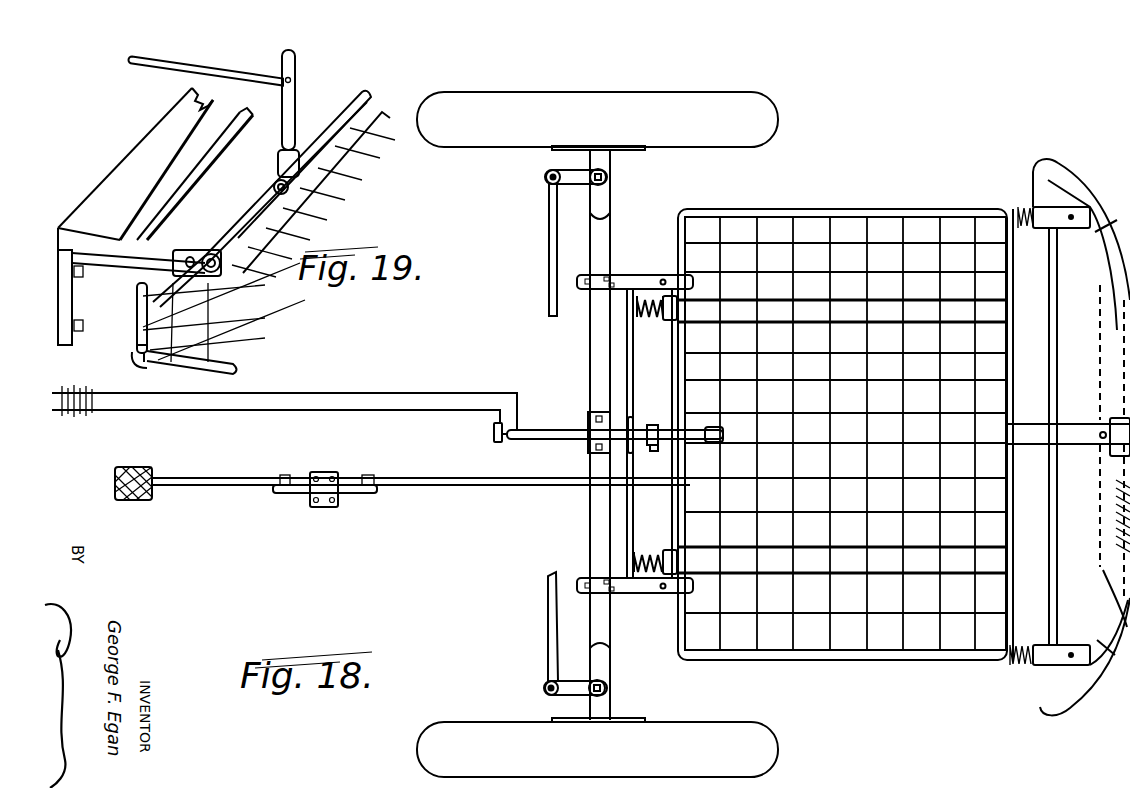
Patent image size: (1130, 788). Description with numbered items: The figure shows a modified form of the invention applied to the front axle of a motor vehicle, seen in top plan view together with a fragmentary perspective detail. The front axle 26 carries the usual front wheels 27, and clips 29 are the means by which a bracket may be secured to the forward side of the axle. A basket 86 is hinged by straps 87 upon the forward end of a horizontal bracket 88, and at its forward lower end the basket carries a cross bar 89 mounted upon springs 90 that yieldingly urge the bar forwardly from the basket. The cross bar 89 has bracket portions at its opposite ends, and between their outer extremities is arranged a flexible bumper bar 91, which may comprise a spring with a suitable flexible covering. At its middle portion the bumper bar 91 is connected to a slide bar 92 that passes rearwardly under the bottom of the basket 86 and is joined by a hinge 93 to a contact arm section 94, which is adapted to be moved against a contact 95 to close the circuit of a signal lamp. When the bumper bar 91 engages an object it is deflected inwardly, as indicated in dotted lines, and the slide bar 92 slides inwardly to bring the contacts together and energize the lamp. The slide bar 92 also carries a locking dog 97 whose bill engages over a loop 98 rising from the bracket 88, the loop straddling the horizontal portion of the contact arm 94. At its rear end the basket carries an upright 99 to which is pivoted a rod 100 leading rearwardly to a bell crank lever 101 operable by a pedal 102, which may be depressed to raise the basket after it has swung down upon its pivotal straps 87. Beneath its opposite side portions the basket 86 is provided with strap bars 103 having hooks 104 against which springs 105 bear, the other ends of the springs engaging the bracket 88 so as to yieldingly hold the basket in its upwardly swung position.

In FIG. 18, the front axle 26 is at (606, 196).
In FIG. 19, the front axle 26 is at (112, 175).
In FIG. 18, the front wheels 27 is at (681, 97).
In FIG. 18, the clips 29 is at (583, 580).
In FIG. 18, the basket 86 is at (839, 650).
In FIG. 19, the basket 86 is at (236, 368).
In FIG. 19, the straps 87 is at (214, 250).
In FIG. 18, the horizontal bracket 88 is at (639, 594).
In FIG. 19, the horizontal bracket 88 is at (128, 266).
In FIG. 18, the cross bar 89 is at (1057, 300).
In FIG. 18, the springs 90 is at (1022, 212).
In FIG. 18, the flexible bumper bar 91 is at (1120, 300).
In FIG. 18, the slide bar 92 is at (1071, 424).
In FIG. 18, the hinge 93 is at (653, 425).
In FIG. 18, the contact arm section 94 is at (552, 430).
In FIG. 18, the contact 95 is at (493, 434).
In FIG. 18, the locking dog 97 is at (651, 460).
In FIG. 18, the loop 98 is at (626, 418).
In FIG. 19, the upright 99 is at (293, 108).
In FIG. 19, the rod 100 is at (212, 58).
In FIG. 18, the bell crank lever 101 is at (346, 492).
In FIG. 18, the pedal 102 is at (158, 490).
In FIG. 18, the strap bars 103 is at (839, 310).
In FIG. 18, the hooks 104 is at (656, 290).
In FIG. 18, the springs 105 is at (640, 296).